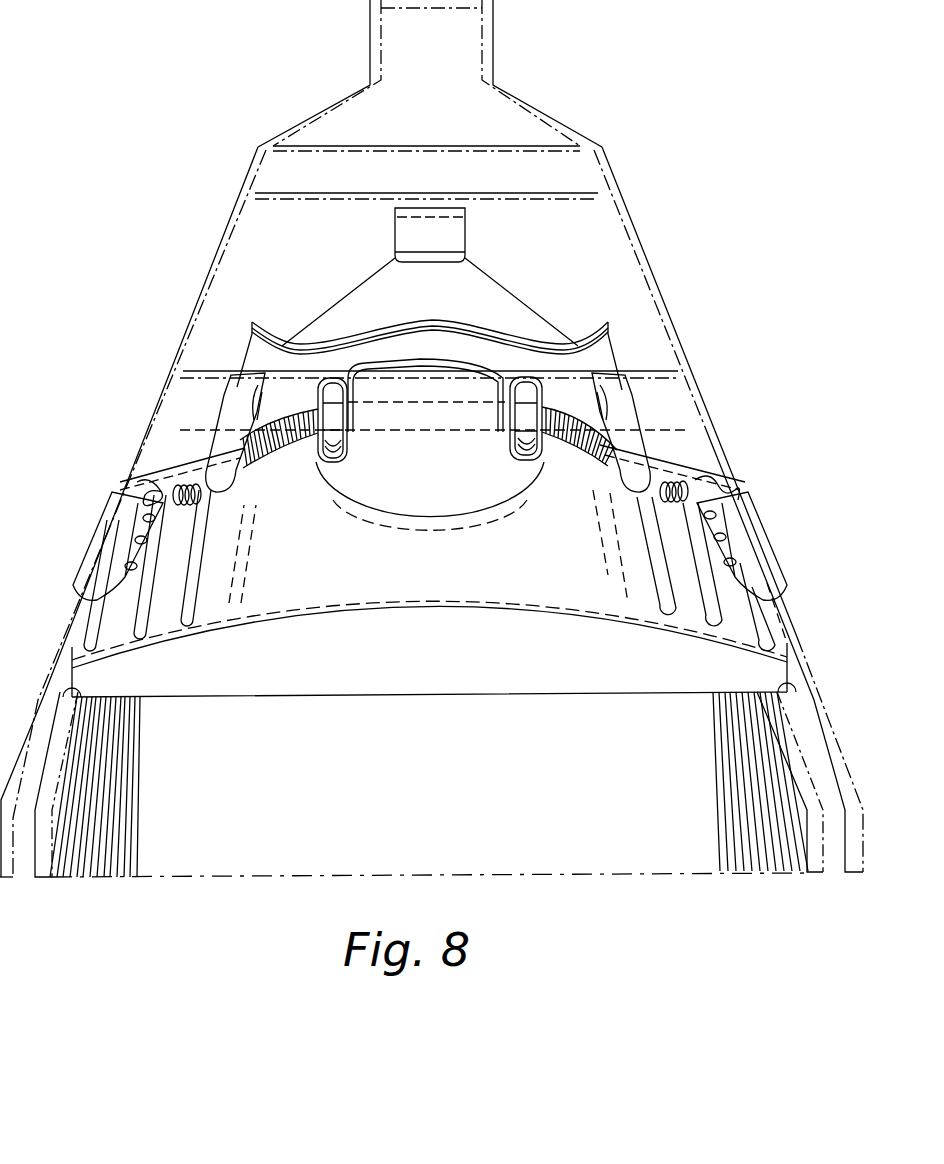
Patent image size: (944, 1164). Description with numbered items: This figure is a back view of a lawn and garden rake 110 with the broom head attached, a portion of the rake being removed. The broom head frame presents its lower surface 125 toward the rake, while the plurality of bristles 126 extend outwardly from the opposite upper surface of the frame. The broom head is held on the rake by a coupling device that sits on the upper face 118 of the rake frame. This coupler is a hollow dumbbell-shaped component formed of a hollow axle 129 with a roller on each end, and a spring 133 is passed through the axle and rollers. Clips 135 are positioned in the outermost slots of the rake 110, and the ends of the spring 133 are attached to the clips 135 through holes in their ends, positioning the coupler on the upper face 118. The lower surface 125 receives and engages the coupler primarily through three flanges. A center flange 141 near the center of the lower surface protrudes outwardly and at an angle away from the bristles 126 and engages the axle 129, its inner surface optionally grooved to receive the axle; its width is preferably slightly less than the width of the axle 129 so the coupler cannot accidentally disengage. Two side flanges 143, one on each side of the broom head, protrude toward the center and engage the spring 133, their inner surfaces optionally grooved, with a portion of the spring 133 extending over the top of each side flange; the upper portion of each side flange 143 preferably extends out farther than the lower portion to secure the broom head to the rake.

The rake 110 is at (356, 86).
The upper face of the rake frame 118 is at (243, 256).
The lower surface of the broom head frame 125 is at (448, 578).
The bristles 126 is at (99, 870).
The hollow axle 129 is at (378, 402).
The spring 133 is at (572, 418).
The clips 135 is at (130, 510).
The center flange 141 is at (462, 362).
The side flanges 143 is at (217, 445).